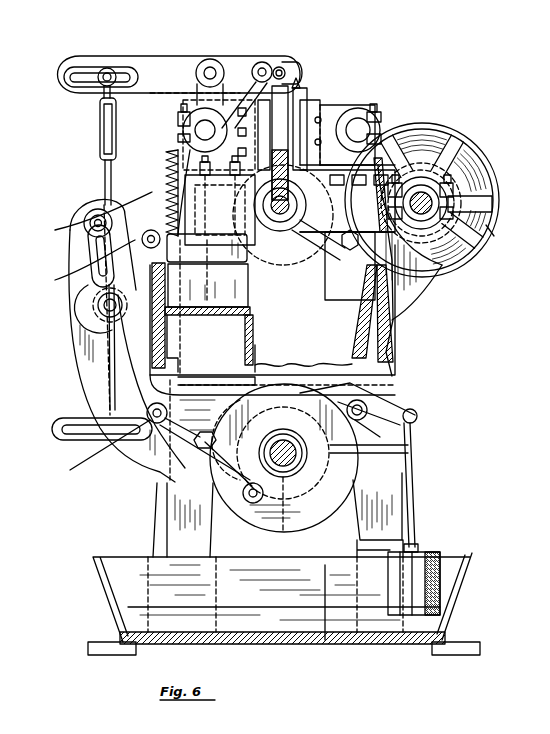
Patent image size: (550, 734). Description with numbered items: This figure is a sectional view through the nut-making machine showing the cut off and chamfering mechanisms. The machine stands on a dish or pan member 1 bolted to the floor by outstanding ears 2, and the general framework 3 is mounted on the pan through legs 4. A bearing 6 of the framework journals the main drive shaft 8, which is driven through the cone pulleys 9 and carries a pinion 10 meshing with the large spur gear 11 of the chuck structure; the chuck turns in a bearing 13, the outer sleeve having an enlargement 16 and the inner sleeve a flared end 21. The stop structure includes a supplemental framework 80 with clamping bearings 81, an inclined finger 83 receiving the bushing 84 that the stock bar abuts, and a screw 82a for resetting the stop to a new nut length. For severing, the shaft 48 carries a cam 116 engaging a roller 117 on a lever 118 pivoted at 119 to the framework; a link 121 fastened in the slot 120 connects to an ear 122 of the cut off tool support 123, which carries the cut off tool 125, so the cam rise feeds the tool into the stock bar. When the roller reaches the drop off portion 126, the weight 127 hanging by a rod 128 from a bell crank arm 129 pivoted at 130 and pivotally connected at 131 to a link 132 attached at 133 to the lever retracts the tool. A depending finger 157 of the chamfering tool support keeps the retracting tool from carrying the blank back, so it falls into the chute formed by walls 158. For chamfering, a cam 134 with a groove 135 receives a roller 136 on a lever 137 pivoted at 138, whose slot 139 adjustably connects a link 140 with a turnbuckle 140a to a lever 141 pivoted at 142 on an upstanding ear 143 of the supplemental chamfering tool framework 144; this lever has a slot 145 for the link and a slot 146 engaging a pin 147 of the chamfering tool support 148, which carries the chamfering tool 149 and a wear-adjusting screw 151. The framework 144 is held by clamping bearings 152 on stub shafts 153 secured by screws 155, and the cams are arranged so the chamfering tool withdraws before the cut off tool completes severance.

The dish or pan member 1 is at (115, 585).
The outstanding ears 2 is at (105, 655).
The general framework 3 is at (150, 330).
The legs 4 is at (180, 535).
The bearing 6 is at (492, 205).
The main drive shaft 8 is at (422, 195).
The cone pulleys 9 is at (478, 172).
The pinion 10 is at (490, 237).
The large spur gear 11 is at (166, 178).
The bearing 13 is at (320, 160).
The enlargement 16 is at (305, 176).
The flared end 21 is at (315, 192).
The shaft 48 is at (283, 532).
The supplemental framework 80 is at (398, 274).
The clamping bearings 81 is at (318, 255).
The screw 82a is at (360, 268).
The inclined finger 83 is at (288, 232).
The bushing 84 is at (298, 255).
The cam 116 is at (292, 477).
The roller 117 is at (262, 475).
The lever 118 is at (196, 445).
The pivot 119 is at (104, 305).
The slot 120 is at (88, 256).
The link 121 is at (84, 224).
The ear 122 is at (95, 190).
The cut off tool support 123 is at (178, 190).
The cut off tool 125 is at (262, 314).
The drop off portion 126 is at (210, 470).
The weight 127 is at (433, 552).
The rod 128 is at (416, 438).
The arm 129 is at (395, 403).
The pivot 130 is at (418, 416).
The pivotal connection 131 is at (362, 402).
The link 132 is at (222, 395).
The connection 133 is at (245, 488).
The cam 134 is at (325, 640).
The groove 135 is at (340, 463).
The roller 136 is at (300, 385).
The lever 137 is at (95, 452).
The pivot 138 is at (157, 425).
The slot 139 is at (52, 428).
The link 140 is at (105, 168).
The turnbuckle 140a is at (100, 123).
The lever 141 is at (148, 58).
The pivot 142 is at (210, 73).
The upstanding ear 143 is at (228, 120).
The supplemental chamfering tool framework 144 is at (200, 112).
The slot 145 is at (80, 73).
The slot 146 is at (284, 62).
The pin 147 is at (286, 73).
The chamfering tool support 148 is at (305, 95).
The chamfering tool 149 is at (378, 130).
The screw 151 is at (300, 85).
The clamping bearings 152 is at (182, 126).
The stub shafts 153 is at (190, 138).
The screws 155 is at (382, 118).
The depending finger 157 is at (185, 152).
The walls 158 is at (392, 340).